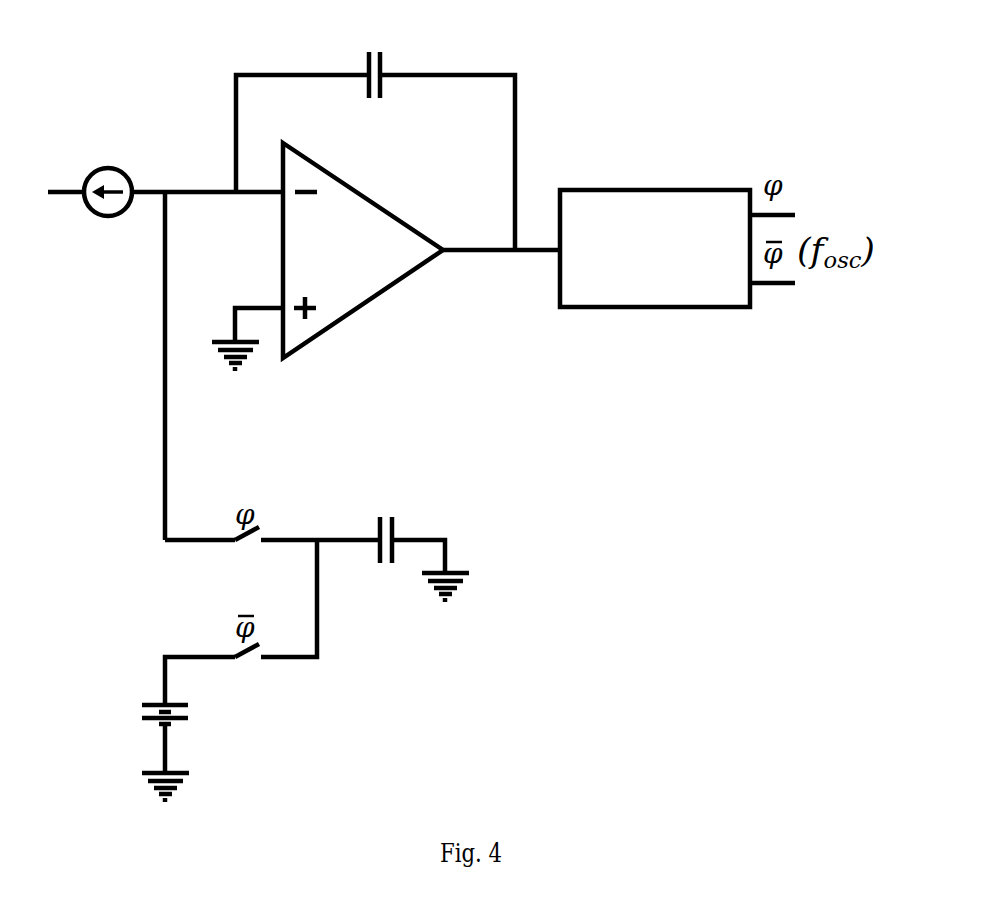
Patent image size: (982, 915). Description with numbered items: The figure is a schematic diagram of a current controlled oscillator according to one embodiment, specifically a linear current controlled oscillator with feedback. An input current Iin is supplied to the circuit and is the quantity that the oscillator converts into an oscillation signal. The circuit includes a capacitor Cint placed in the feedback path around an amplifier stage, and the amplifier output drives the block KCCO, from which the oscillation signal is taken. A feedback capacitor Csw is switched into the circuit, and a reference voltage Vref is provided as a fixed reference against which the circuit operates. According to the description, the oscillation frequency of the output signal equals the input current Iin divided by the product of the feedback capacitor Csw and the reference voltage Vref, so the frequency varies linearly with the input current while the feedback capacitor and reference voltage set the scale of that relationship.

The input current Iin is at (108, 173).
The integration capacitor Cint is at (374, 54).
The feedback capacitor Csw is at (384, 518).
The current controlled oscillator KCCO is at (655, 248).
The reference voltage Vref is at (128, 714).